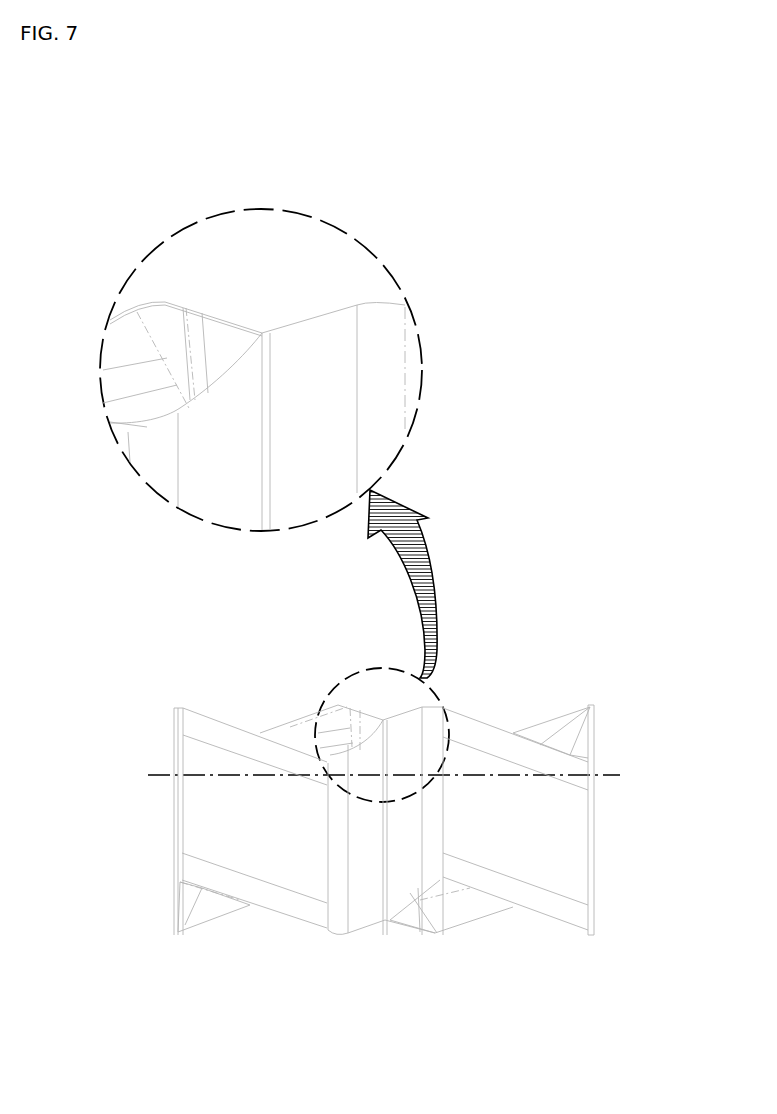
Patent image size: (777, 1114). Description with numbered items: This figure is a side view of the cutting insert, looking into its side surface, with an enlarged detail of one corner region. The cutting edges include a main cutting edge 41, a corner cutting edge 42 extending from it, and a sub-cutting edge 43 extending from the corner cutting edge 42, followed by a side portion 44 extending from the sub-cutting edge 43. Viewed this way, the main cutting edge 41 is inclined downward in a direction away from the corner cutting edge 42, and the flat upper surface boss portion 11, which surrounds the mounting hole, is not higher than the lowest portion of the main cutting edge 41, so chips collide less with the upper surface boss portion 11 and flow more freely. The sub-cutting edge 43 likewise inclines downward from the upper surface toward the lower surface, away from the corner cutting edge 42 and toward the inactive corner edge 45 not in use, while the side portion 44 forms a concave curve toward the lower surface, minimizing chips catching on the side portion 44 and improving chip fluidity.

The upper surface boss portion 11 is at (238, 775).
The main cutting edge 41 is at (490, 727).
The corner cutting edge 42 is at (430, 707).
The sub-cutting edge 43 is at (393, 713).
The side portion 44 is at (370, 728).
The inactive corner edge 45 is at (328, 763).